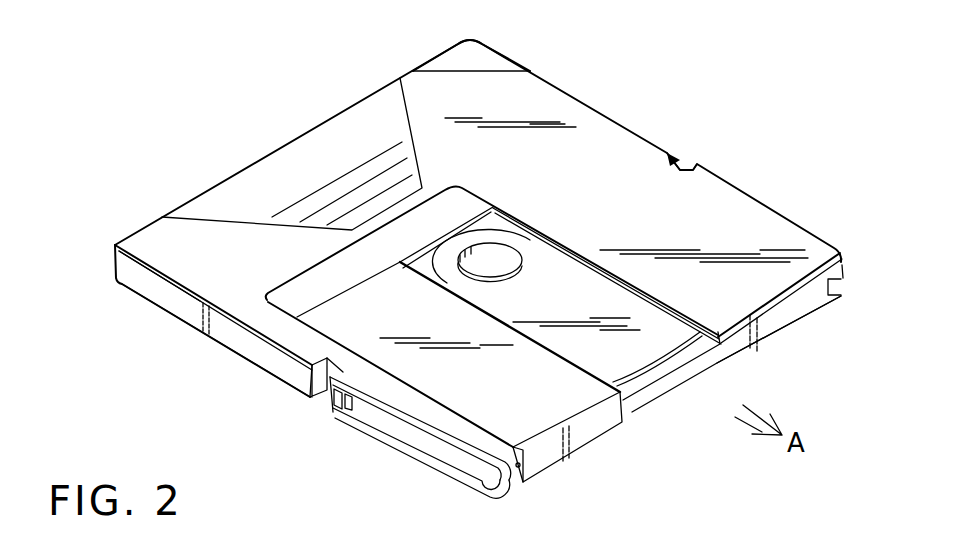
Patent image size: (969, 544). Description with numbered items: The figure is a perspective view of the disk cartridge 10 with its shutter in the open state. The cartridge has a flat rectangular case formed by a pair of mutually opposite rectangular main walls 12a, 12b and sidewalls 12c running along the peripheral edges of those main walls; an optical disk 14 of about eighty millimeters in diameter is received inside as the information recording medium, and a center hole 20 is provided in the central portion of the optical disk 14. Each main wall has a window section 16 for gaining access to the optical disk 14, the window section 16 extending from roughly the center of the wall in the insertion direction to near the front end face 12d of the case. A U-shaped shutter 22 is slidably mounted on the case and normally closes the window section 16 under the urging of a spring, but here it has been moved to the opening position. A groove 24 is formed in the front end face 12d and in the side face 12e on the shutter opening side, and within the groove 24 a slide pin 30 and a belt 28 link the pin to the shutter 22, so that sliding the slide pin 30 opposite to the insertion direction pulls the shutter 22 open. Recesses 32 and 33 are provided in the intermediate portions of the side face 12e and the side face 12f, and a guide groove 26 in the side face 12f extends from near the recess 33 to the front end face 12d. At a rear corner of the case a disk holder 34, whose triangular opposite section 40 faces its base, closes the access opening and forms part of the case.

The disk cartridge 10 is at (332, 103).
The main wall 12a is at (582, 127).
The main wall 12b is at (261, 368).
The sidewalls 12c is at (198, 311).
The front end face 12d is at (782, 312).
The side face 12e is at (240, 338).
The side face 12f is at (783, 220).
The optical disk 14 is at (663, 343).
The window section 16 is at (610, 290).
The center hole 20 is at (503, 248).
The shutter 22 is at (578, 405).
The groove 24 is at (403, 440).
The guide groove 26 is at (843, 284).
The belt 28 is at (443, 453).
The slide pin 30 is at (343, 408).
The recess 32 is at (323, 397).
The recess 33 is at (690, 162).
The disk holder 34 is at (506, 51).
The opposite section 40 is at (450, 62).